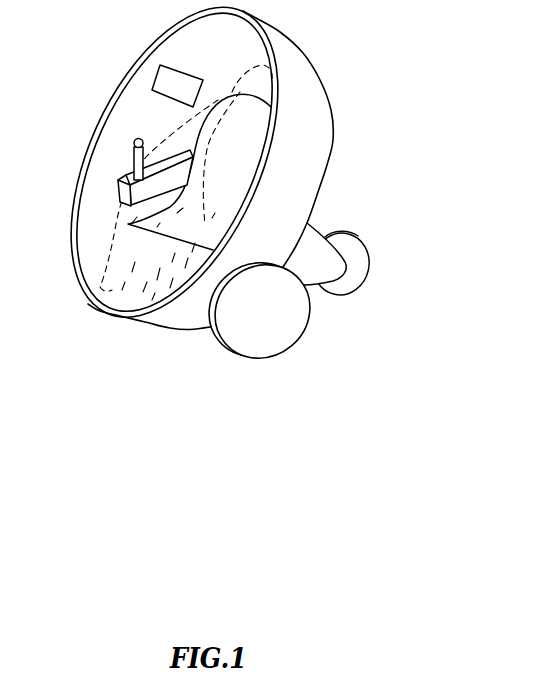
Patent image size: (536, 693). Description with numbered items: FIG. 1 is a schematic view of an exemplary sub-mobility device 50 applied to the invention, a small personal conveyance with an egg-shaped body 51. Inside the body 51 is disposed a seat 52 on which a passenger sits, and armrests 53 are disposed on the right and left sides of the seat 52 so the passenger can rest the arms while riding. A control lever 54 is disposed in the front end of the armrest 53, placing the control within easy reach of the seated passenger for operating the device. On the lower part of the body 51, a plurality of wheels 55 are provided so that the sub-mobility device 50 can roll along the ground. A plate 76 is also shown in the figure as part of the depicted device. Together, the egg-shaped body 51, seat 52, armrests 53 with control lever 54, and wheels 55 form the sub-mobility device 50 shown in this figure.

The sub-mobility device 50 is at (256, 188).
The body 51 is at (303, 68).
The seat 52 is at (247, 167).
The armrests 53 is at (117, 182).
The control lever 54 is at (133, 152).
The wheels 55 is at (368, 258).
The plate 76 is at (160, 80).